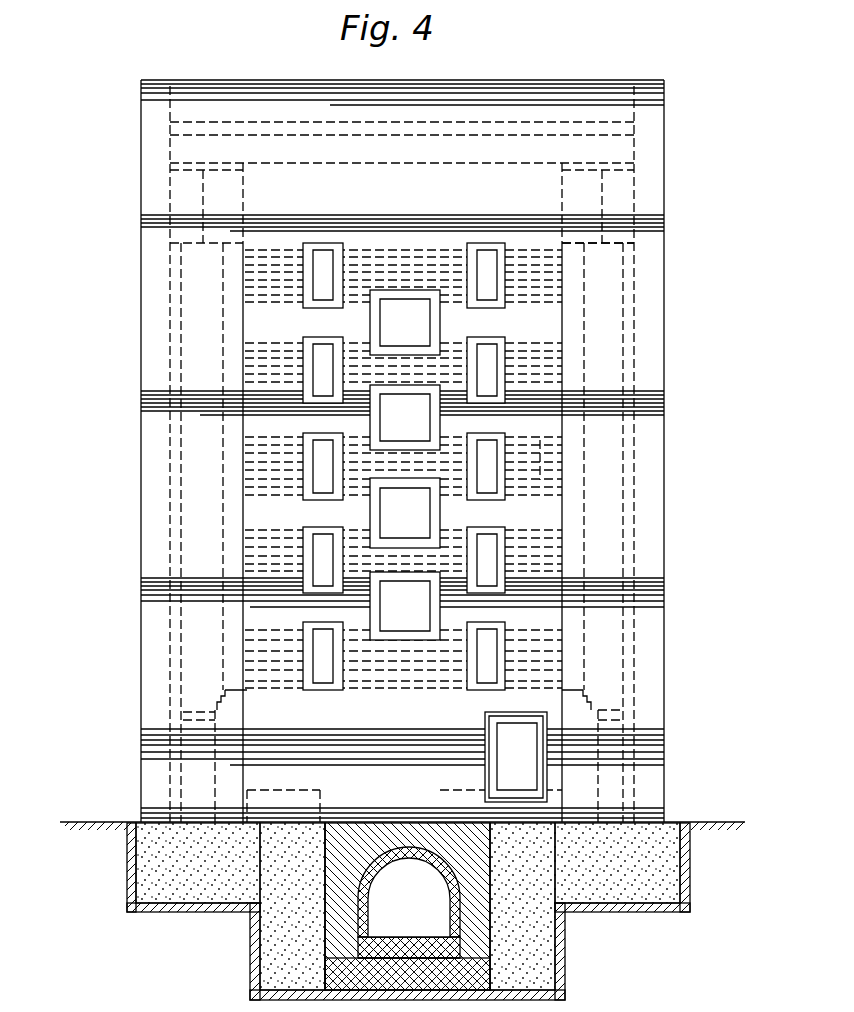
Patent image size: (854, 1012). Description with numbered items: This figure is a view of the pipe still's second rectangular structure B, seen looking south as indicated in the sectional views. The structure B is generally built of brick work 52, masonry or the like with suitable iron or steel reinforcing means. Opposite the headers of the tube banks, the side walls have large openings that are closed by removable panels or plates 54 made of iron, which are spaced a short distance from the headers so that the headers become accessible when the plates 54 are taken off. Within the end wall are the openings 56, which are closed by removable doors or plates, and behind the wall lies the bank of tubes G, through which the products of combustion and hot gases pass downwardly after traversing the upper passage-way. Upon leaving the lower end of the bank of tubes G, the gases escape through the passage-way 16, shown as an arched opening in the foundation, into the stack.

The rectangular structure B is at (554, 110).
The brick work 52 is at (605, 327).
The panels or plates 54 is at (170, 498).
The openings 56 is at (325, 357).
The bank of tubes G is at (520, 630).
The passage-way 16 is at (399, 912).